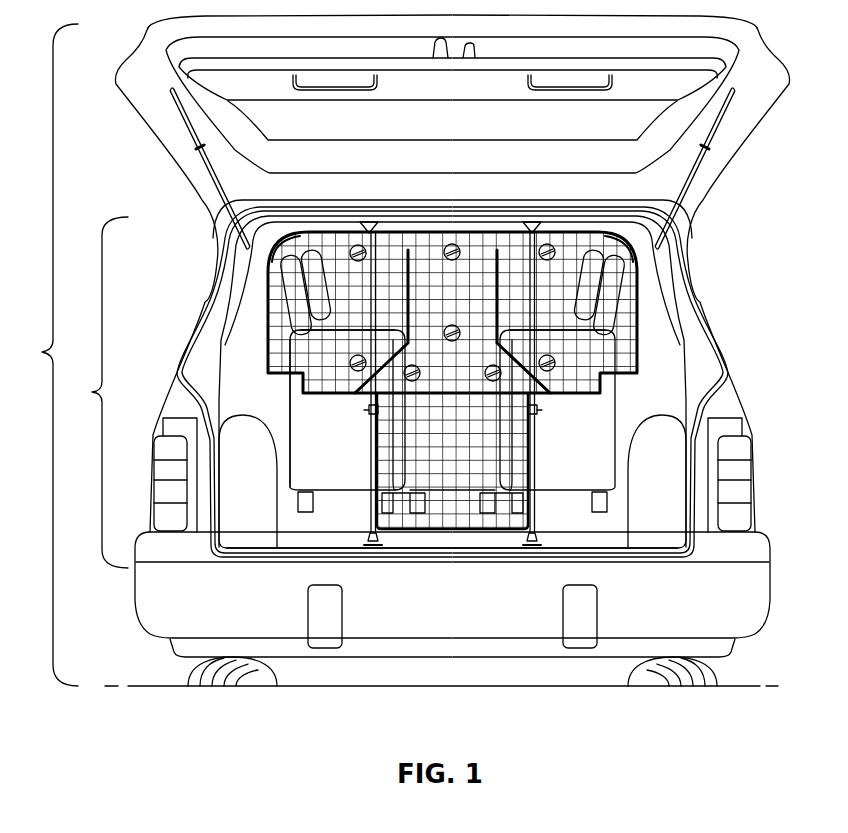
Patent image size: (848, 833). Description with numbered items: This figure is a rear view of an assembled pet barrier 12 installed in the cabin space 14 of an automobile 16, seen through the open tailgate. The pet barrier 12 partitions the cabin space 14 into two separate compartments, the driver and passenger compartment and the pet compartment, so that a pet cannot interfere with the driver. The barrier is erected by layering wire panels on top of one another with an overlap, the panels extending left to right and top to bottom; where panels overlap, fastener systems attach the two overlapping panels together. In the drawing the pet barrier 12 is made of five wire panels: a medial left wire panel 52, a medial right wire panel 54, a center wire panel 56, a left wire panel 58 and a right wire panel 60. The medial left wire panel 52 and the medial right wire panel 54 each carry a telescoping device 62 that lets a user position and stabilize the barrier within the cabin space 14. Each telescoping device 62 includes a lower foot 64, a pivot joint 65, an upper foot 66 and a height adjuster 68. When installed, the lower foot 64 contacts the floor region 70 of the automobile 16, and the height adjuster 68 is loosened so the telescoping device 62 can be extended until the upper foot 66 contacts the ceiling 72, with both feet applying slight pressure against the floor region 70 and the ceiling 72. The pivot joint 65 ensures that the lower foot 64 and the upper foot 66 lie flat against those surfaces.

The pet barrier 12 is at (95, 392).
The cabin space 14 is at (337, 425).
The automobile 16 is at (43, 355).
The medial left wire panel 52 is at (407, 226).
The medial right wire panel 54 is at (491, 226).
The center wire panel 56 is at (440, 538).
The left wire panel 58 is at (284, 234).
The right wire panel 60 is at (624, 234).
The telescoping device 62 is at (368, 448).
The lower foot 64 is at (534, 547).
The pivot joint 65 is at (541, 533).
The upper foot 66 is at (533, 221).
The height adjuster 68 is at (541, 411).
The floor region 70 is at (325, 545).
The ceiling 72 is at (443, 222).